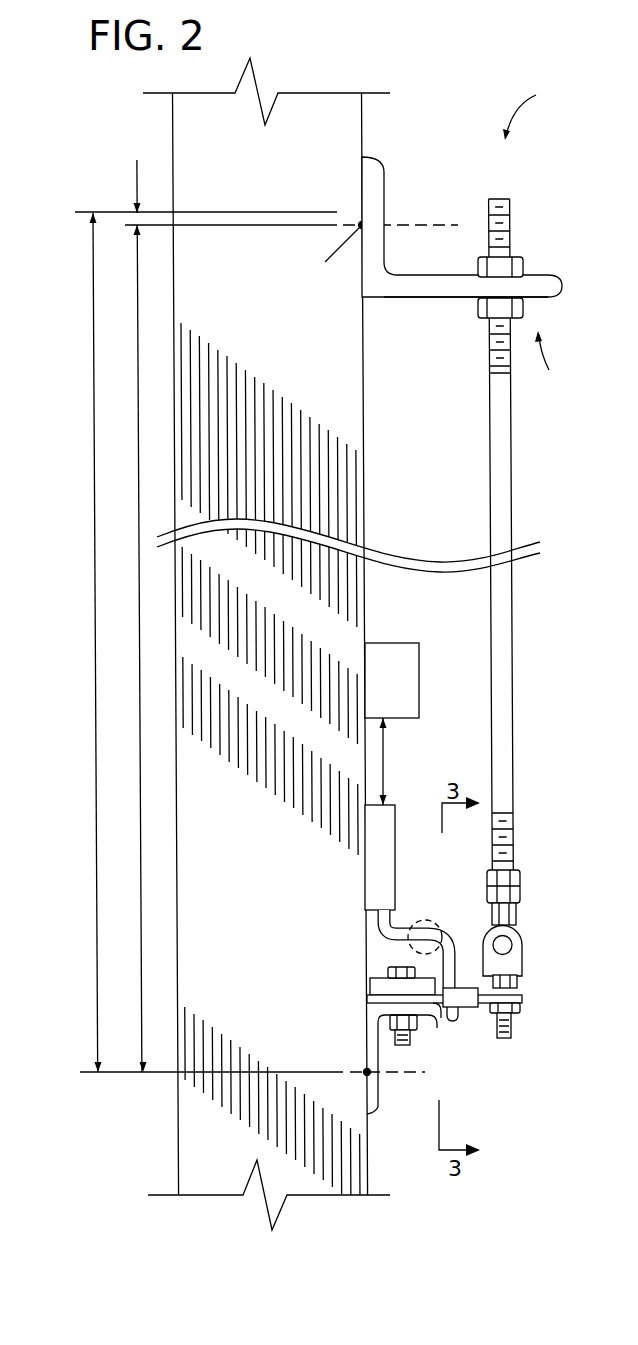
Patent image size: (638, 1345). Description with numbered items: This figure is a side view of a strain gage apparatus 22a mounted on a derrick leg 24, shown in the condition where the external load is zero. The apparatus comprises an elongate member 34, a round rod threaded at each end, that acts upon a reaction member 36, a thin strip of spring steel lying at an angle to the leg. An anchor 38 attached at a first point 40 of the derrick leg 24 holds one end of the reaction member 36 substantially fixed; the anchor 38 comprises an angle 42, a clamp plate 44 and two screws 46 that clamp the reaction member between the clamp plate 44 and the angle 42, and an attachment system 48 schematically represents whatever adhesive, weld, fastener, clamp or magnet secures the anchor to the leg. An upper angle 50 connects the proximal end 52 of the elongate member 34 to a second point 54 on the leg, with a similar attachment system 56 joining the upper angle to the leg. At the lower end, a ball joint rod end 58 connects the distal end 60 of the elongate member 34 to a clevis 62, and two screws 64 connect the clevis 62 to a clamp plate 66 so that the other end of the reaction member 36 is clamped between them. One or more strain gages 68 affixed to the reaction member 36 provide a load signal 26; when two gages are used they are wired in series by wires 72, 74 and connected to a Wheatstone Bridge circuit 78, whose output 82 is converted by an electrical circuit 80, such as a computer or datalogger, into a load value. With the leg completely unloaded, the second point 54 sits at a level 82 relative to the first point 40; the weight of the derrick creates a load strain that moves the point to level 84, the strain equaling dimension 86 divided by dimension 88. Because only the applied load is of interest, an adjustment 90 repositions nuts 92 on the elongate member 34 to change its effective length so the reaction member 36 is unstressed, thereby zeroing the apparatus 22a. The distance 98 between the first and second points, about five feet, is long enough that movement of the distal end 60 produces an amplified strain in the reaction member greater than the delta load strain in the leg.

The strain gage apparatus 22a is at (547, 109).
The derrick leg 24 is at (367, 500).
The load signal 26 is at (437, 918).
The elongate member 34 is at (513, 478).
The reaction member 36 is at (439, 1022).
The anchor 38 is at (429, 1052).
The first point 40 is at (367, 1072).
The angle 42 is at (380, 1108).
The clamp plate 44 is at (387, 988).
The screws 46 is at (387, 972).
The attachment system 48 is at (380, 1075).
The upper angle 50 is at (560, 282).
The proximal end 52 is at (512, 232).
The second point 54 is at (325, 262).
The attachment system 56 is at (393, 224).
The ball joint rod end 58 is at (522, 915).
The distal end 60 is at (513, 851).
The clevis 62 is at (522, 970).
The screws 64 is at (512, 1030).
The clamp plate 66 is at (522, 1005).
The strain gage 68 is at (457, 987).
The wire 72 is at (370, 935).
The wire 74 is at (401, 924).
The Wheatstone Bridge circuit 78 is at (397, 833).
The electrical circuit 80 is at (420, 660).
The output / level 82 is at (112, 212).
The level 84 is at (197, 228).
The dimension 86 is at (133, 177).
The dimension 88 is at (95, 340).
The adjustment 90 is at (551, 365).
The nuts 92 is at (477, 266).
The distance 98 is at (139, 387).